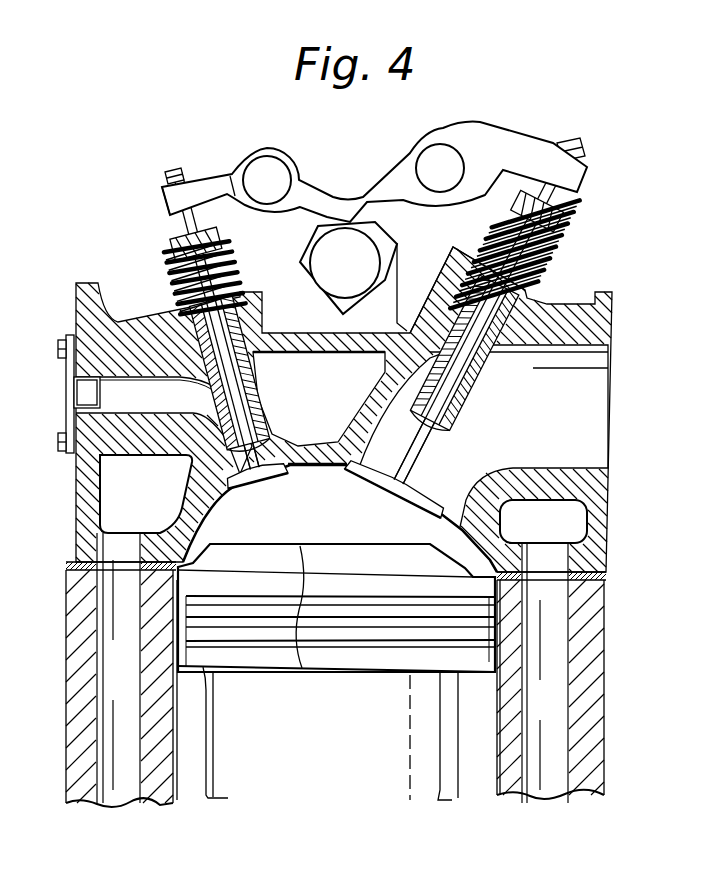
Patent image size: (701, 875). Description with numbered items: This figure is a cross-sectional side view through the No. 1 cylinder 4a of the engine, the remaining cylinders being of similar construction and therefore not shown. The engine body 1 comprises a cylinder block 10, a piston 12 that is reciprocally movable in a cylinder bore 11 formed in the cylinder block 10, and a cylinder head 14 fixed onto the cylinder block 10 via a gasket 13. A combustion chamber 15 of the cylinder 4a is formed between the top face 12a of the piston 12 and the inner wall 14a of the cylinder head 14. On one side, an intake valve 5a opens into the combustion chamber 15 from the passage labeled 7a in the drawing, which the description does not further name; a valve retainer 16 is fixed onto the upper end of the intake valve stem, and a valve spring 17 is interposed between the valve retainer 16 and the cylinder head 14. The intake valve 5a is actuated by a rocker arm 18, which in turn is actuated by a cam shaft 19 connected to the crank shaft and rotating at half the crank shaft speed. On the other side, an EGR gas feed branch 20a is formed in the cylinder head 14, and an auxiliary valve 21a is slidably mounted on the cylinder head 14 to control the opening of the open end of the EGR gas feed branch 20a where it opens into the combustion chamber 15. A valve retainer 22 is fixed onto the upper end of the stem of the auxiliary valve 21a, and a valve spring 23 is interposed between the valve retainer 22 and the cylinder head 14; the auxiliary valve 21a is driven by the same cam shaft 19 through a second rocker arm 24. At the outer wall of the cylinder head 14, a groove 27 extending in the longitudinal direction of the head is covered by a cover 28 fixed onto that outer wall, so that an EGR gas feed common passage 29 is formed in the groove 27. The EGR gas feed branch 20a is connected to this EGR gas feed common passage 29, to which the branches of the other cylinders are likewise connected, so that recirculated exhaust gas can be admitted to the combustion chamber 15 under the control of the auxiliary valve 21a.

The engine body 1 is at (614, 525).
The No. 1 cylinder 4a is at (230, 520).
The intake valve 5a is at (440, 436).
The exhaust port 7a is at (528, 414).
The cylinder block 10 is at (598, 728).
The cylinder bore 11 is at (572, 762).
The piston 12 is at (450, 800).
The top face of the piston 12a is at (308, 625).
The gasket 13 is at (608, 574).
The cylinder head 14 is at (440, 300).
The inner wall of the cylinder head 14a is at (306, 464).
The combustion chamber 15 is at (284, 518).
The valve retainer 16 is at (570, 218).
The valve spring 17 is at (555, 262).
The rocker arm 18 is at (464, 126).
The cam shaft 19 is at (330, 243).
The EGR gas feed branch 20a is at (135, 388).
The auxiliary valve 21a is at (260, 440).
The valve retainer 22 is at (168, 236).
The valve spring 23 is at (172, 282).
The rocker arm 24 is at (206, 178).
The groove 27 is at (68, 394).
The cover 28 is at (63, 360).
The EGR gas feed common passage 29 is at (76, 402).